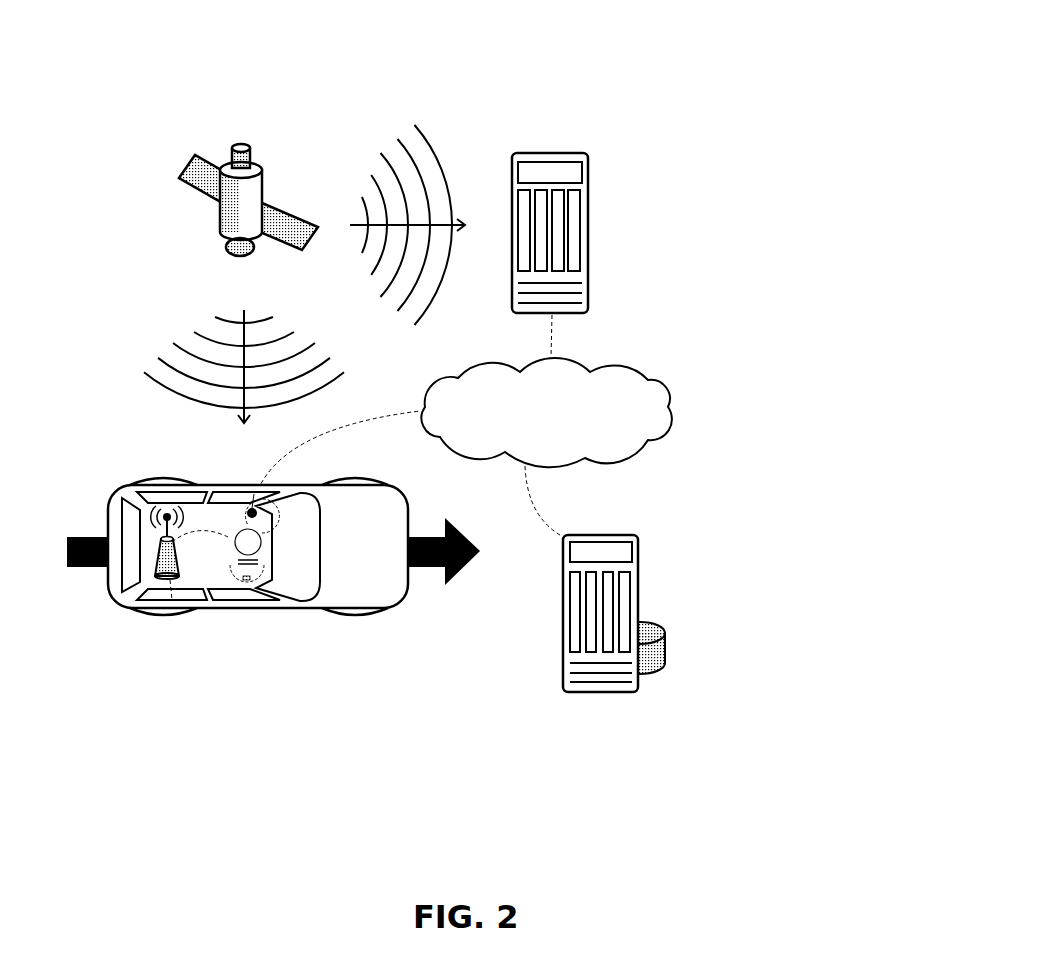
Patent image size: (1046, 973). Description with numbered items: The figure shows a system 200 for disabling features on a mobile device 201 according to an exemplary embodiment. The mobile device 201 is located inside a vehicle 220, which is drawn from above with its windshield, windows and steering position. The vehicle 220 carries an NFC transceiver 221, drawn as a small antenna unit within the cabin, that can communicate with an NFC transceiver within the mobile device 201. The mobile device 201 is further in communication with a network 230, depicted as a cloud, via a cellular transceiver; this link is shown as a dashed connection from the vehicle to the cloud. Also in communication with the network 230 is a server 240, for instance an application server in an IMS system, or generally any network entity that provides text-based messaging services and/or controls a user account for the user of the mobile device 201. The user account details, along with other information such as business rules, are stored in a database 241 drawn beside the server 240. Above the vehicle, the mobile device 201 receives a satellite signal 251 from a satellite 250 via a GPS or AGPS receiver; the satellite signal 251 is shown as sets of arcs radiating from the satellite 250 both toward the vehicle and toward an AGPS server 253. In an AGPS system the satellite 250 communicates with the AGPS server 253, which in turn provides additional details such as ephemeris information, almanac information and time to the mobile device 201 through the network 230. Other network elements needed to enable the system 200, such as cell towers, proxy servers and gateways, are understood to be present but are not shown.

The system 200 is at (500, 75).
The satellite 250 is at (223, 160).
The satellite signal 251 is at (415, 127).
The AGPS server 253 is at (590, 208).
The network 230 is at (462, 446).
The server 240 is at (640, 578).
The database 241 is at (667, 633).
The vehicle 220 is at (227, 492).
The mobile device 201 is at (250, 592).
The NFC transceiver 221 is at (172, 600).